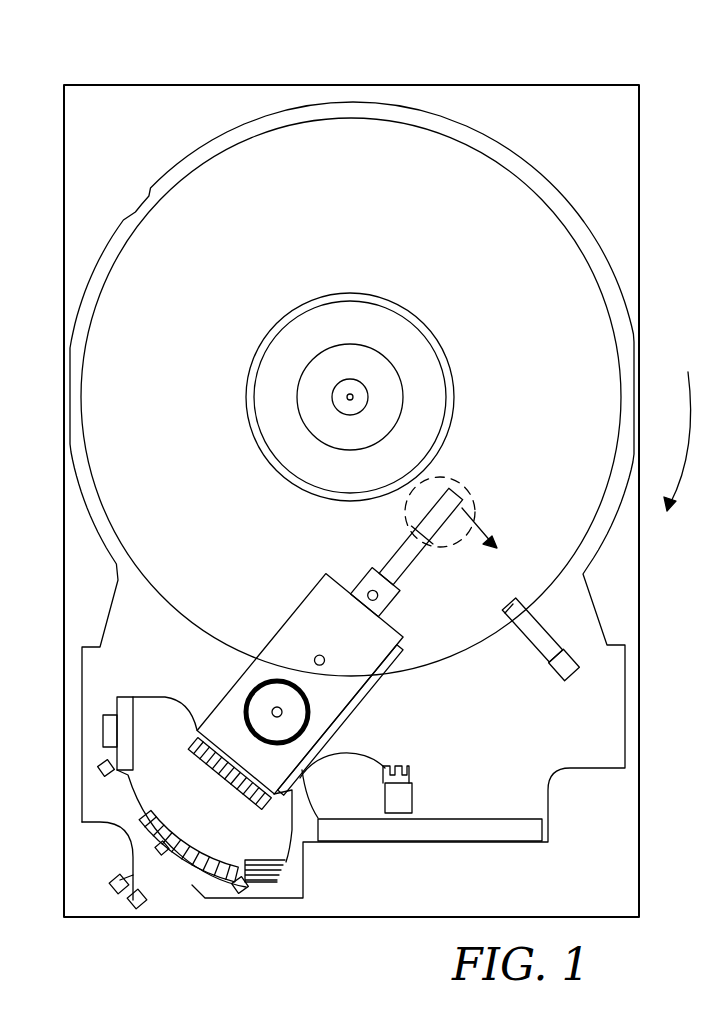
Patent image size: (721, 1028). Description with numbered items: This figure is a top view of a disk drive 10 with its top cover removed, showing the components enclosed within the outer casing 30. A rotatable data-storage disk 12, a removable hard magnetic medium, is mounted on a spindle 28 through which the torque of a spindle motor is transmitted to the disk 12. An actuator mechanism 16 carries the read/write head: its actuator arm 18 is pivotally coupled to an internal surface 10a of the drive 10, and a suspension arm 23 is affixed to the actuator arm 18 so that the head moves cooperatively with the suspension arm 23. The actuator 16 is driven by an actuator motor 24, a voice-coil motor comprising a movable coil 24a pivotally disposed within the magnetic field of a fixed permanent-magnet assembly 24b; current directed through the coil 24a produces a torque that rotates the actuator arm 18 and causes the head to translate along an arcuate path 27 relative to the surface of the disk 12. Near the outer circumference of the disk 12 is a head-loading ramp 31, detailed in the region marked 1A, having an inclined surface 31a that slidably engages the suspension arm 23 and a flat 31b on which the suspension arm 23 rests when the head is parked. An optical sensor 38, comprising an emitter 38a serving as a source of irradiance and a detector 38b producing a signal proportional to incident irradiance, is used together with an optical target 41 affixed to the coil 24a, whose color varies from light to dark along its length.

The disk drive 10 is at (586, 66).
The internal surface 10a is at (188, 672).
The data-storage disk 12 is at (556, 322).
The spindle 28 is at (352, 394).
The actuator mechanism 16 is at (321, 560).
The actuator arm 18 is at (365, 669).
The suspension arm 23 is at (399, 556).
The head / slider detail region 1A is at (457, 482).
The arcuate path 27 is at (482, 533).
The head-loading ramp 31 is at (513, 637).
The inclined surface 31a is at (520, 603).
The flat 31b is at (566, 662).
The outer casing 30 is at (627, 862).
The actuator motor 24 is at (120, 780).
The permanent-magnet assembly 24b is at (233, 837).
The movable coil 24a is at (183, 882).
The optical target 41 is at (163, 852).
The optical sensor 38 is at (102, 880).
The emitter 38a is at (118, 893).
The detector 38b is at (138, 908).